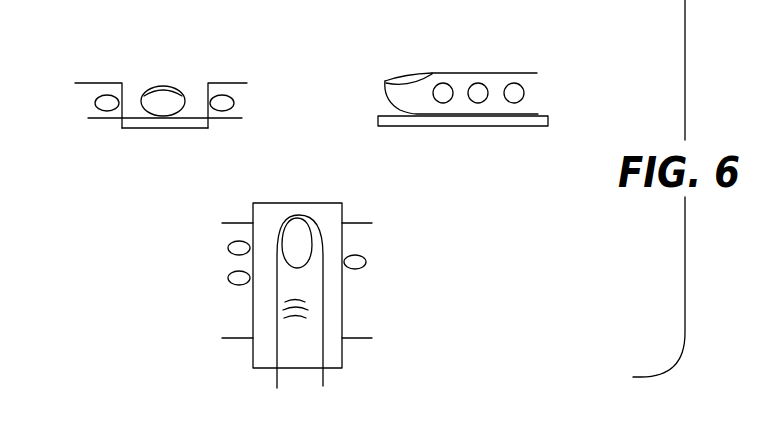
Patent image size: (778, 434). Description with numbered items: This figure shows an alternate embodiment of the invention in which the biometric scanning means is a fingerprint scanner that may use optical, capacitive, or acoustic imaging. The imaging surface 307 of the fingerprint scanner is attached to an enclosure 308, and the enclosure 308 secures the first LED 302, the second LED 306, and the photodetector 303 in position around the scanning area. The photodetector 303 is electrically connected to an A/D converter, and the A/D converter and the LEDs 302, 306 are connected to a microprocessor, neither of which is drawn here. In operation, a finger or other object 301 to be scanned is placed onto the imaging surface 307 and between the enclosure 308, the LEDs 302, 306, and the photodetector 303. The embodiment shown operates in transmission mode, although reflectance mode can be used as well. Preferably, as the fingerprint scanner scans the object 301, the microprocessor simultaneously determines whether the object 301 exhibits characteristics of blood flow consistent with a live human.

The finger or other object 301 is at (177, 85).
The first LED 302 is at (230, 108).
The photodetector 303 is at (95, 112).
The second LED 306 is at (525, 93).
The imaging surface 307 is at (158, 129).
The enclosure 308 is at (90, 83).